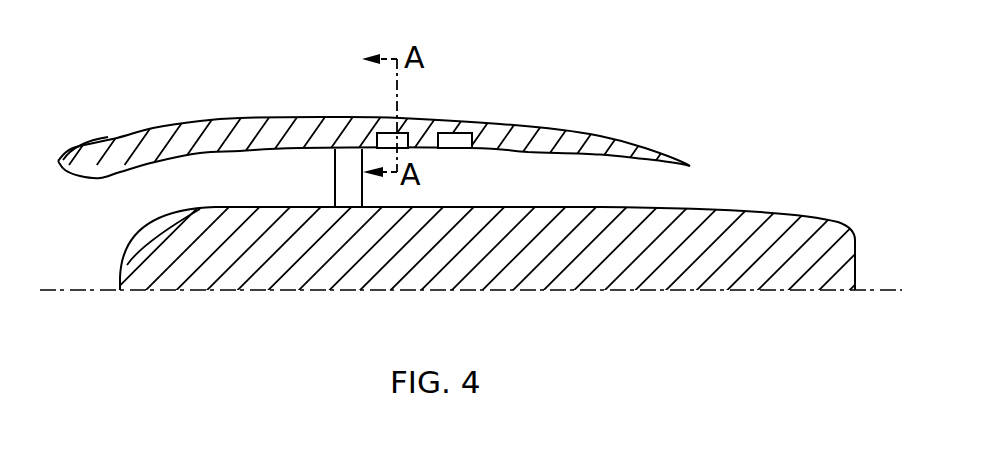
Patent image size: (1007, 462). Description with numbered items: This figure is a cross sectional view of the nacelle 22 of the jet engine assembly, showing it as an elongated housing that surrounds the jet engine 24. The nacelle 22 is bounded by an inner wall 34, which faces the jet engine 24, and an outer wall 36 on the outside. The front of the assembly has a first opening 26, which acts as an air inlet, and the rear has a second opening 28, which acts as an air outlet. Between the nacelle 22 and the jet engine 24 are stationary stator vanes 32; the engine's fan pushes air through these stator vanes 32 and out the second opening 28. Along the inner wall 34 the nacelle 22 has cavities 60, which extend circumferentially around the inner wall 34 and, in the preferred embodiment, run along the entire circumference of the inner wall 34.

The nacelle 22 is at (487, 181).
The jet engine 24 is at (193, 277).
The first opening 26 is at (134, 218).
The second opening 28 is at (706, 198).
The stationary stator vanes 32 is at (335, 168).
The inner wall 34 is at (528, 153).
The outer wall 36 is at (545, 128).
The cavities 60 is at (455, 133).